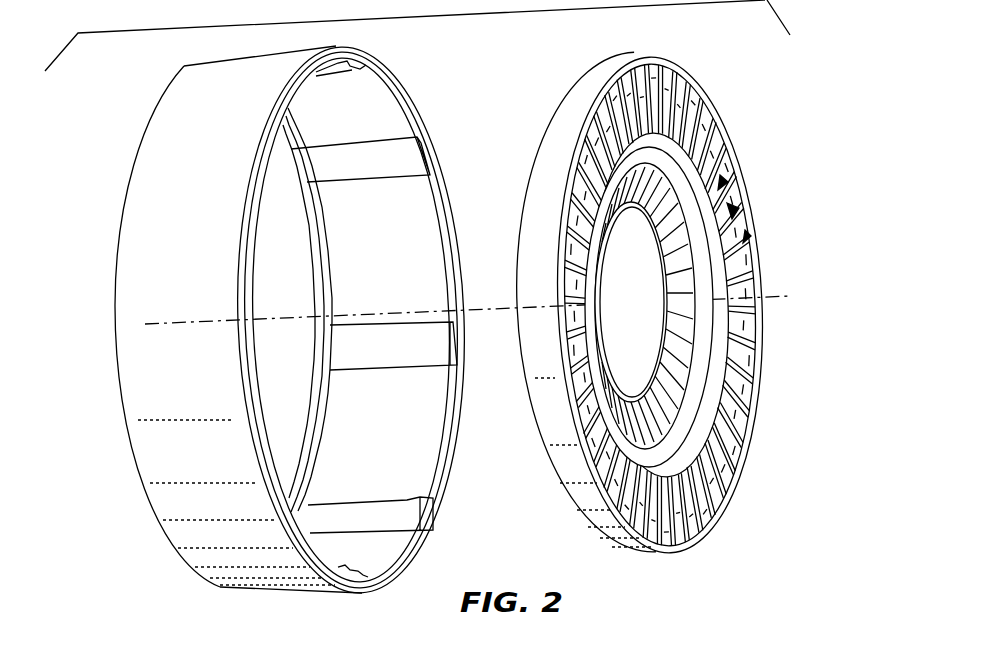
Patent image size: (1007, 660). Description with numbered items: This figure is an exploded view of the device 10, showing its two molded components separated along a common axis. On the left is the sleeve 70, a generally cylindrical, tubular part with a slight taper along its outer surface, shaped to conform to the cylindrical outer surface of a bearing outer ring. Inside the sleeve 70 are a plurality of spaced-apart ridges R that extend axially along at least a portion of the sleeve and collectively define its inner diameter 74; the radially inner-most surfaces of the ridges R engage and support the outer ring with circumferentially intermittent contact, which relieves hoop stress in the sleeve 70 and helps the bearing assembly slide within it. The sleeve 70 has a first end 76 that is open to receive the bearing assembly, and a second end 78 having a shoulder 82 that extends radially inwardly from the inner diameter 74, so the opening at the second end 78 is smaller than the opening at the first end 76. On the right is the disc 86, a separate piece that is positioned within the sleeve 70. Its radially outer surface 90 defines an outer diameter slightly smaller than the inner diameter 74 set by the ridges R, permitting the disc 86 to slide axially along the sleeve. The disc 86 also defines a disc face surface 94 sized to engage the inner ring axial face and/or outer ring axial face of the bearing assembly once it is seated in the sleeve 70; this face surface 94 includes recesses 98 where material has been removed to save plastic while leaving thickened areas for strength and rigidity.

The device 10 is at (88, 164).
The sleeve 70 is at (153, 396).
The inner diameter 74 is at (393, 158).
The first end 76 is at (317, 548).
The second end 78 is at (150, 507).
The shoulder 82 is at (316, 268).
The ridges R is at (415, 173).
The disc 86 is at (737, 163).
The radially outer surface 90 is at (613, 62).
The disc face surface 94 is at (612, 176).
The recesses 98 is at (697, 250).